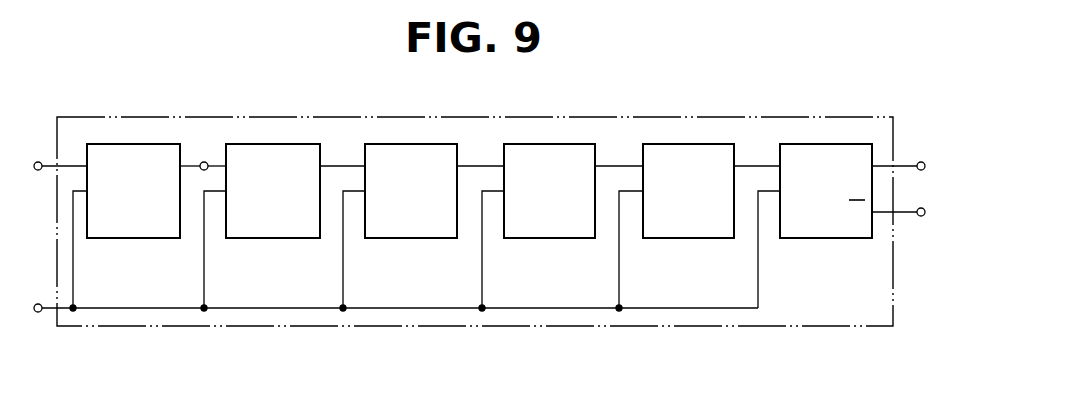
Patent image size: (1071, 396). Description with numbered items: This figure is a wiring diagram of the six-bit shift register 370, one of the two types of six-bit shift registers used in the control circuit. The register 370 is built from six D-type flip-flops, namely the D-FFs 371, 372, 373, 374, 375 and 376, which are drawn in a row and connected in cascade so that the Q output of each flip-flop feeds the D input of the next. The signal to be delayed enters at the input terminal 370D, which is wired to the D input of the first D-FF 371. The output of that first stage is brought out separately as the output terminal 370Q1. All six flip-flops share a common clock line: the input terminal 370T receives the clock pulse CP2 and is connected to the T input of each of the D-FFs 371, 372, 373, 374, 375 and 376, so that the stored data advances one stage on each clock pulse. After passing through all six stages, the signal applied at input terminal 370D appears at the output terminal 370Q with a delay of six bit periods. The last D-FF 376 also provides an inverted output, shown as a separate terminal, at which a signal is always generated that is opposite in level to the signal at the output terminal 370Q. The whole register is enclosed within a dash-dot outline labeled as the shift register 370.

The 6-bit shift register 370 is at (358, 117).
The input terminal 370D is at (38, 162).
The output terminal of the D-FF 371 370Q1 is at (204, 162).
The output terminal 370Q is at (920, 162).
The input terminal for the clock pulse CP2 370T is at (40, 312).
The D-FF 371 is at (125, 240).
The D-FF 372 is at (267, 240).
The D-FF 373 is at (405, 240).
The D-FF 374 is at (537, 240).
The D-FF 375 is at (677, 240).
The D-FF 376 is at (795, 239).